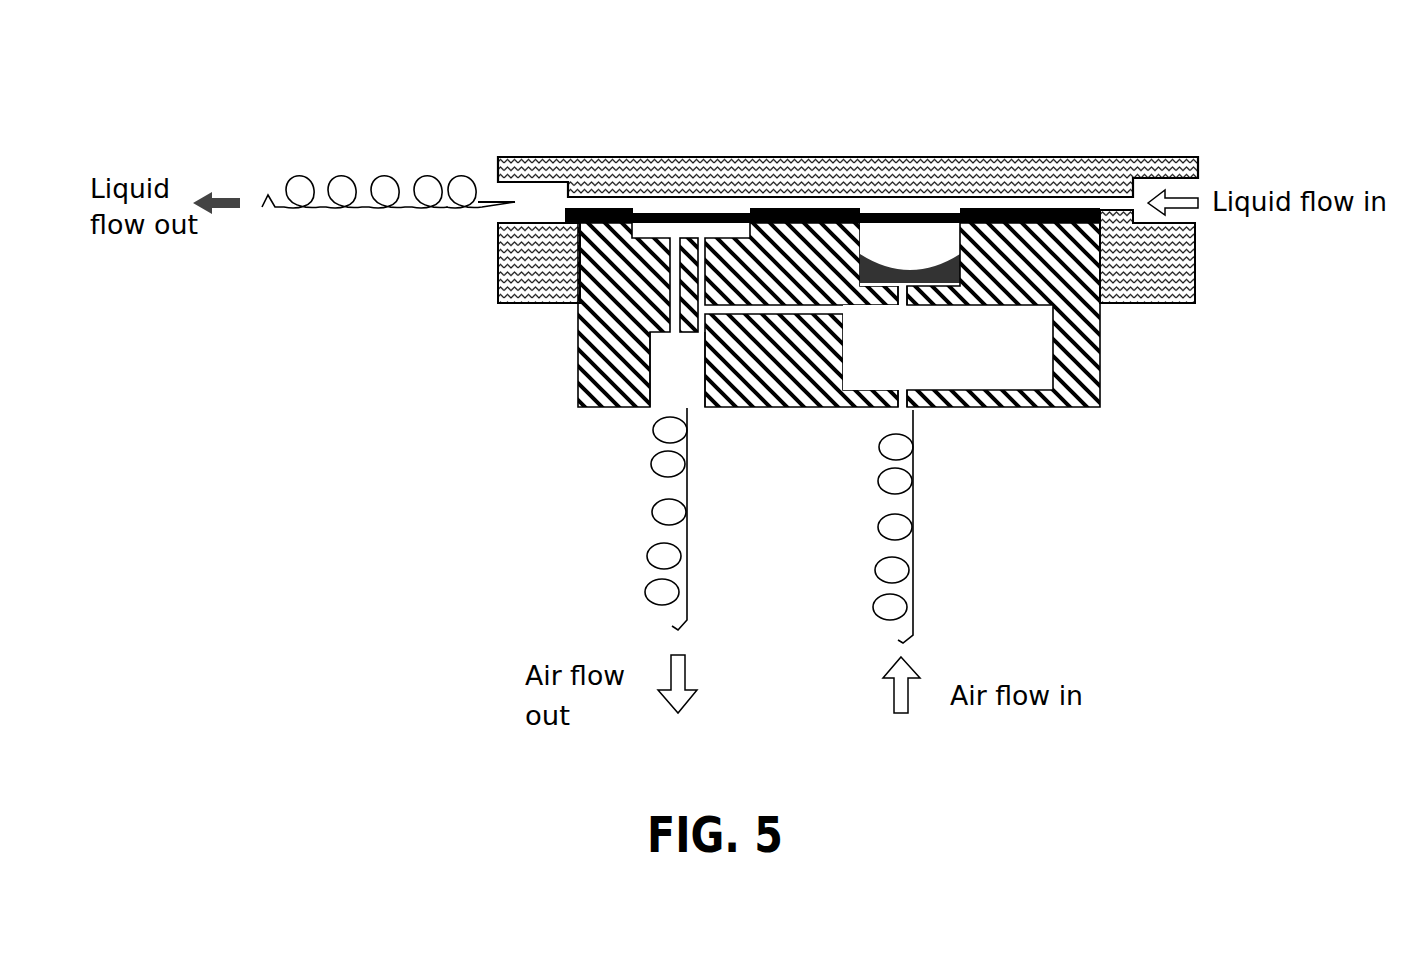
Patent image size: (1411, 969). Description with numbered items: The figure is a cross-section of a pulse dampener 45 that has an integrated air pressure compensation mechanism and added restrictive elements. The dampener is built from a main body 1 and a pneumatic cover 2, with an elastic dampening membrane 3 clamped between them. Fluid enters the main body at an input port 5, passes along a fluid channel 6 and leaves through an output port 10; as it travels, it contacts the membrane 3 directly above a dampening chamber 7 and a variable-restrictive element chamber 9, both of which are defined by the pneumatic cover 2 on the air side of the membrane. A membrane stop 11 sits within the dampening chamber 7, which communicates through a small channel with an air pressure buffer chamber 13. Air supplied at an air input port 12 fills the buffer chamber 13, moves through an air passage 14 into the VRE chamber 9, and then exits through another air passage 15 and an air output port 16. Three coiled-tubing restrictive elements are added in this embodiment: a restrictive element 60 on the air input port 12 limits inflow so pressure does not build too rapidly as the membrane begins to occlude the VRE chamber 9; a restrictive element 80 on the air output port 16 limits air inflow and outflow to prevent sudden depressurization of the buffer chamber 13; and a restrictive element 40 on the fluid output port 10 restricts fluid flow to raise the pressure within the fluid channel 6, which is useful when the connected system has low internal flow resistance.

The main body 1 is at (1167, 273).
The pneumatic cover 2 is at (1077, 385).
The elastic dampening membrane 3 is at (875, 218).
The input port 5 is at (1180, 192).
The fluid channel 6 is at (1008, 205).
The dampening chamber 7 is at (919, 256).
The variable-restrictive element (VRE) chamber 9 is at (650, 235).
The output port 10 is at (538, 203).
The membrane stop 11 is at (887, 268).
The air input port 12 is at (910, 415).
The air pressure buffer chamber 13 is at (1036, 341).
The air passage 14 is at (738, 315).
The air passage 15 is at (668, 290).
The air output port 16 is at (693, 365).
The restrictive element 40 is at (388, 214).
The pulse dampener 45 is at (400, 332).
The restrictive element 60 is at (918, 526).
The restrictive element 80 is at (638, 519).